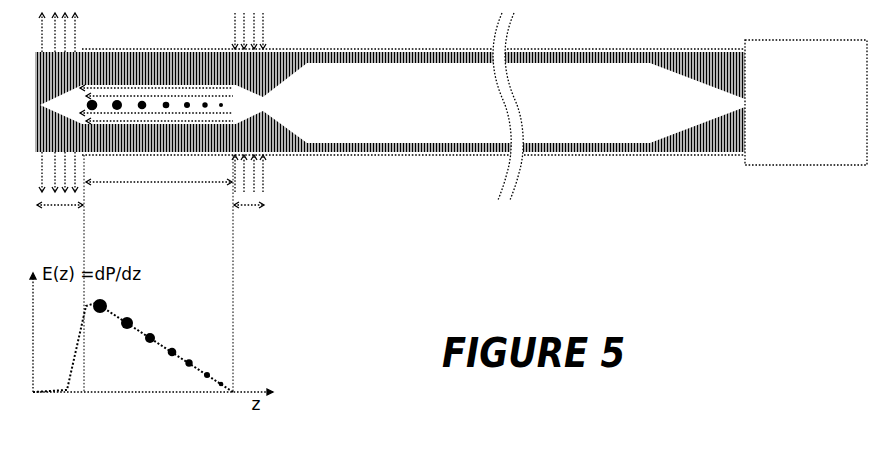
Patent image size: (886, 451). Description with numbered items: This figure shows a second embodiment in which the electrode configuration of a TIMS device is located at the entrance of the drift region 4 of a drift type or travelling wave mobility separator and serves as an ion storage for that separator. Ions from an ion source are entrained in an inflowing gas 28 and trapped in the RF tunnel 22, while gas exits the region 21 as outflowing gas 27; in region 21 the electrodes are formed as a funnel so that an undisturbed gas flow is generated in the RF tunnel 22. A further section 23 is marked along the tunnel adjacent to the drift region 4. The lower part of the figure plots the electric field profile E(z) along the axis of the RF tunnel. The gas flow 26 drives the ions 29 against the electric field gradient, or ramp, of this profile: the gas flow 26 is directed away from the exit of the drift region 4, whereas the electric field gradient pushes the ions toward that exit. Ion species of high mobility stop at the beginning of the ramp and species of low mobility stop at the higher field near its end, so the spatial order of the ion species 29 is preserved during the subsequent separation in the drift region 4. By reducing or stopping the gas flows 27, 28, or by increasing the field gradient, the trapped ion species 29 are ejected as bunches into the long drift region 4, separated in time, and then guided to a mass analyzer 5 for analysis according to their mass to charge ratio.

The drift region 4 is at (497, 182).
The mass analyzer 5 is at (806, 102).
The region 21 is at (60, 215).
The RF tunnel 22 is at (159, 191).
The pump coupling section length 23 is at (249, 215).
The gas flow 26 is at (145, 104).
The outflowing gas 27 is at (69, 102).
The inflowing gas 28 is at (259, 102).
The ions 29 is at (182, 90).